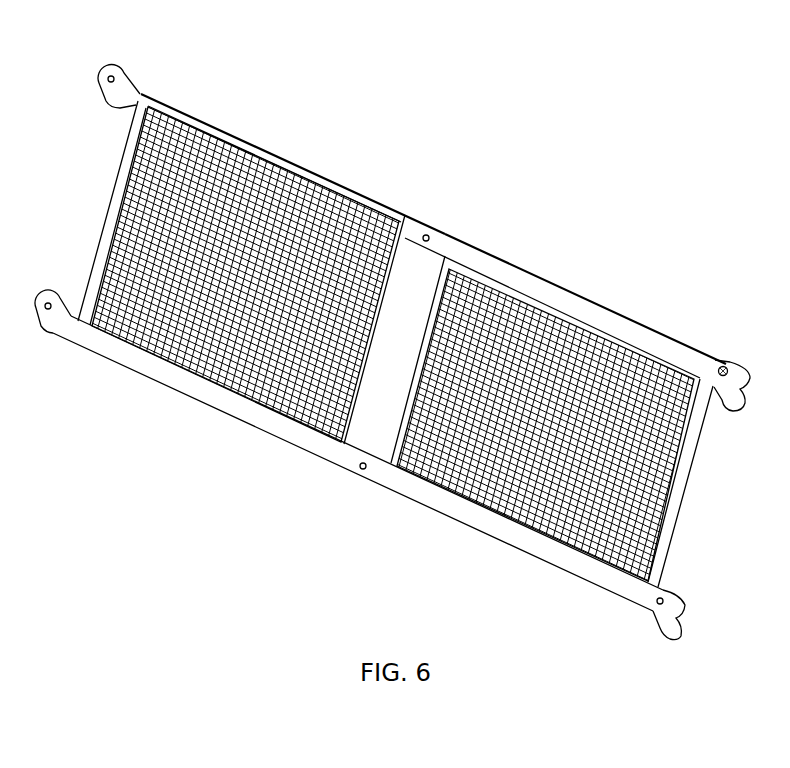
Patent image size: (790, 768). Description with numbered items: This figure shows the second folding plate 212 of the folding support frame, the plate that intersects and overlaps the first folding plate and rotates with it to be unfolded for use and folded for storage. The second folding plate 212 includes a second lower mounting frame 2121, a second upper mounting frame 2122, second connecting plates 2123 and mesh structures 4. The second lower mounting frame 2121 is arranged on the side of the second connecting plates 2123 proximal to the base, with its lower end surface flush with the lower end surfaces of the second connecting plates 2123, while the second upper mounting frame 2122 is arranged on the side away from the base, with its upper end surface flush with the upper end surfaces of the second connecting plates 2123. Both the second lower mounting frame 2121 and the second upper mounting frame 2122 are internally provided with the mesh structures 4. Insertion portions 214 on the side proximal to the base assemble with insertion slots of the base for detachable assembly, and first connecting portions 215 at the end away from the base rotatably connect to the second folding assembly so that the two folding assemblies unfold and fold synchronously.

The mesh structure 4 is at (358, 200).
The second folding plate 212 is at (380, 367).
The second lower mounting frame 2121 is at (272, 150).
The second upper mounting frame 2122 is at (490, 273).
The second connecting plate 2123 is at (597, 313).
The insertion portion 214 is at (723, 403).
The first connecting portion 215 is at (110, 58).